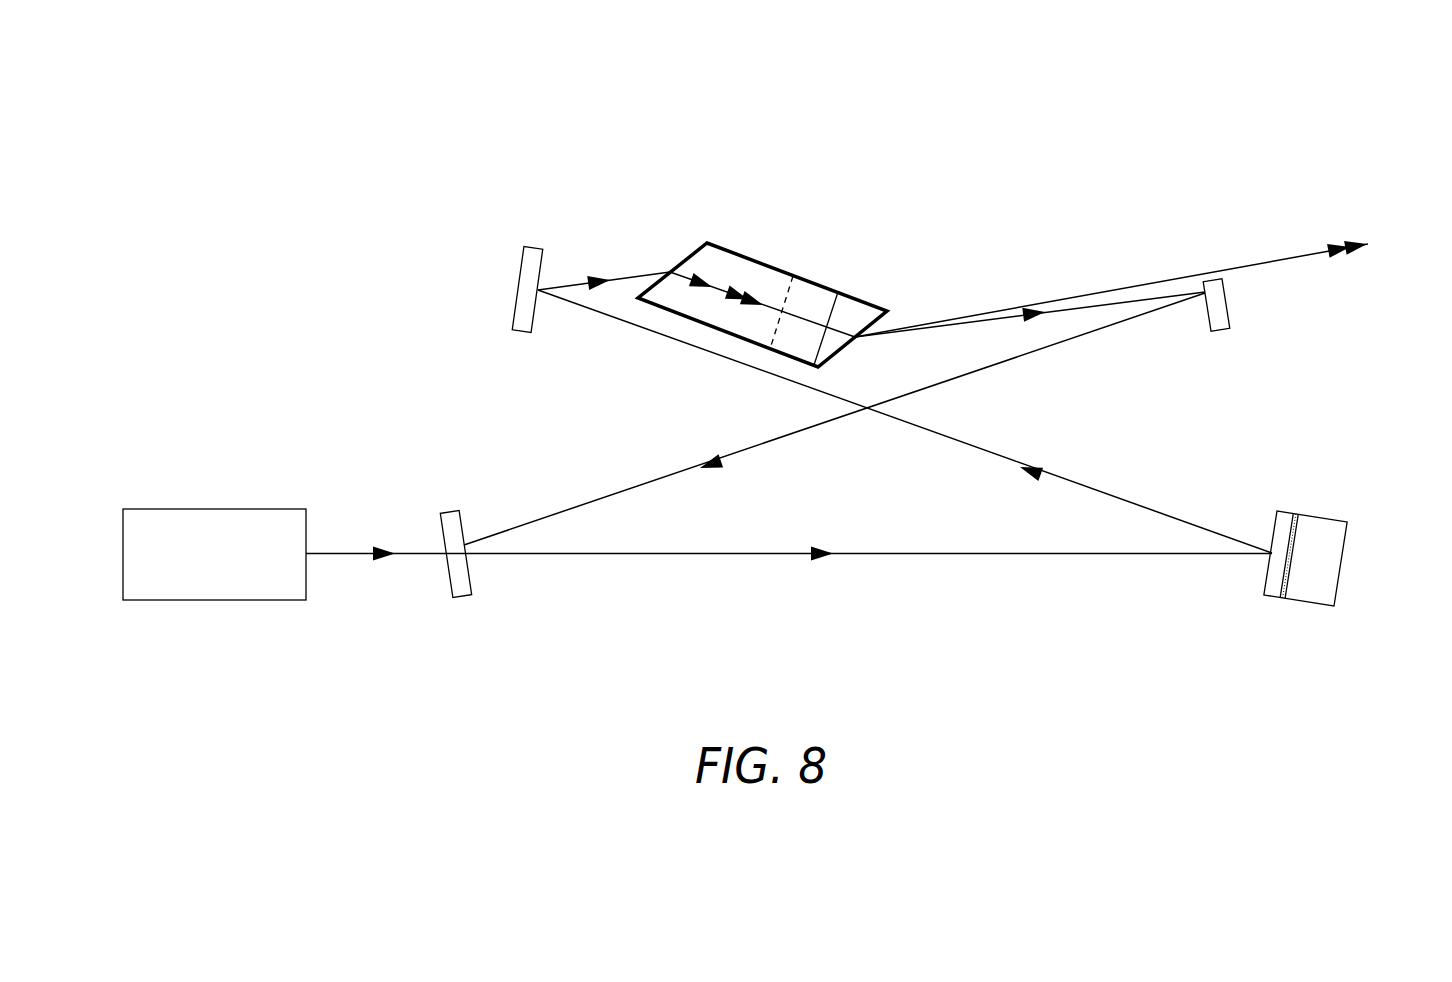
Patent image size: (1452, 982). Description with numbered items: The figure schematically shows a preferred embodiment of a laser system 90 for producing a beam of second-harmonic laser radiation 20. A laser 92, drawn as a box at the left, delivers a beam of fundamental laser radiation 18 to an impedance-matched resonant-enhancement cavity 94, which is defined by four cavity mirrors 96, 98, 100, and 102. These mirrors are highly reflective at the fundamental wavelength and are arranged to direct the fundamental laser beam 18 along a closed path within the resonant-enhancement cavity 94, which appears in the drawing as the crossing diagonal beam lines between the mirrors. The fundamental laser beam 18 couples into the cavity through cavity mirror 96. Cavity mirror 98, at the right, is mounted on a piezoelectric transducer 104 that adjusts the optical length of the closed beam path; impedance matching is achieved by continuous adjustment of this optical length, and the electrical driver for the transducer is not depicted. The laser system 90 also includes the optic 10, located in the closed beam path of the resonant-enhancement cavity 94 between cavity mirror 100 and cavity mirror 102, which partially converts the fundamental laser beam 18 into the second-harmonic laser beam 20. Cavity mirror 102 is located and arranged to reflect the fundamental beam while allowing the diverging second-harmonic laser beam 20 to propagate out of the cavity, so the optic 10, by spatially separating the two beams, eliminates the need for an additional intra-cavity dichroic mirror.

The laser system 90 is at (288, 150).
The laser 92 is at (182, 513).
The fundamental laser beam 18 is at (408, 558).
The cavity mirror 96 is at (448, 516).
The cavity mirror 98 is at (1287, 517).
The piezoelectric transducer 104 is at (1333, 593).
The resonant-enhancement cavity 94 is at (972, 247).
The cavity mirror 100 is at (523, 263).
The cavity mirror 102 is at (1228, 312).
The optic 10 is at (755, 262).
The second-harmonic laser beam 20 is at (1270, 258).